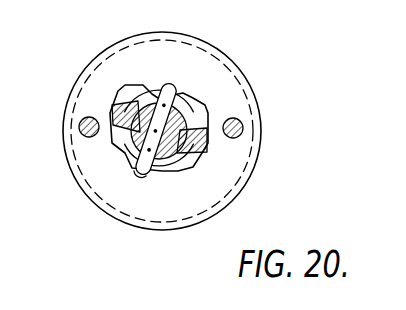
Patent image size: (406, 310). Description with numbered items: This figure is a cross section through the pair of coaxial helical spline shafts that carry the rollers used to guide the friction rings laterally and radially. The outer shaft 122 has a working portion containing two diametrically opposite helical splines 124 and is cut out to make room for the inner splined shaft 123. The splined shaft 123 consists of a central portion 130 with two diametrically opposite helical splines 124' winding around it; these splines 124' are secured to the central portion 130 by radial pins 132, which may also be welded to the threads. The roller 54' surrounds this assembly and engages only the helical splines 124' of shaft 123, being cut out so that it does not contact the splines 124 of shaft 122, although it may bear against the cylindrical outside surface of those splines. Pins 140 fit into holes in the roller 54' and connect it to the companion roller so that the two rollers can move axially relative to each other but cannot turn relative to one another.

The roller 54' is at (162, 131).
The pin 140 is at (80, 134).
The helical spline shaft 122 is at (126, 120).
The splined shaft 123 is at (182, 93).
The helical spline 124 is at (177, 106).
The helical spline 124' is at (140, 127).
The central portion 130 is at (190, 118).
The radial pin 132 is at (147, 177).